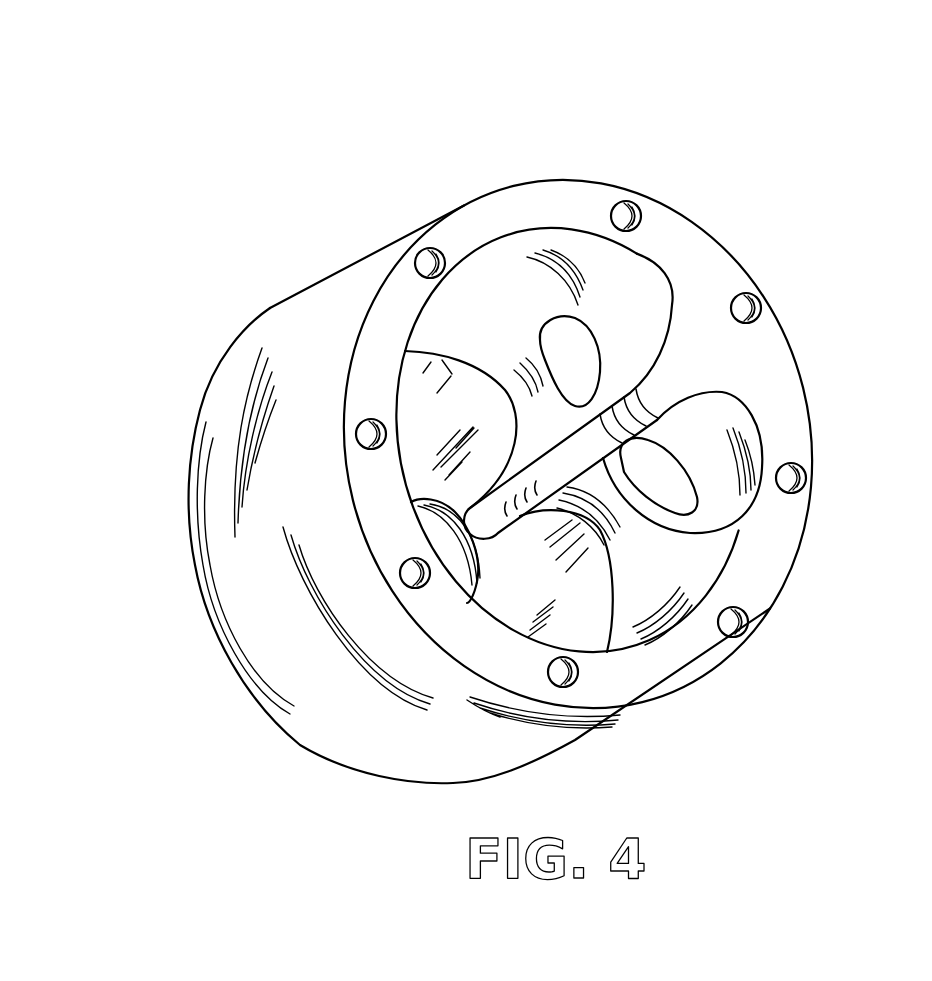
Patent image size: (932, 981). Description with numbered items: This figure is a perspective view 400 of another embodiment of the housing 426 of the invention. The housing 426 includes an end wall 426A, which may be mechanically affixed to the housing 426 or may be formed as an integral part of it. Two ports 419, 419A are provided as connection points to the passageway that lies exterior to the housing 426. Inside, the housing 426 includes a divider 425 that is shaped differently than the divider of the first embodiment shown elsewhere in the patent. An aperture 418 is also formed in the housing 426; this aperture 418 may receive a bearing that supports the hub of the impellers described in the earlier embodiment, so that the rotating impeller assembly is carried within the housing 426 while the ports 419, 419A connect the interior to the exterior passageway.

The perspective view 400 is at (408, 158).
The aperture 418 is at (440, 550).
The port 419 is at (657, 467).
The port 419A is at (584, 365).
The divider 425 is at (650, 522).
The housing 426 is at (280, 367).
The end wall 426A is at (432, 410).